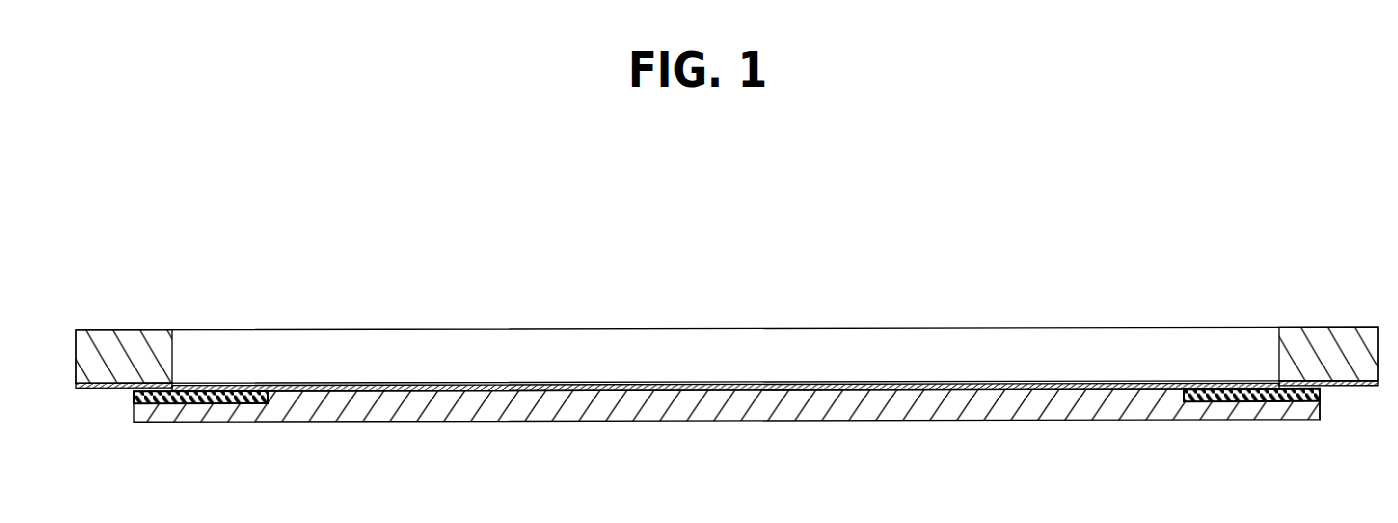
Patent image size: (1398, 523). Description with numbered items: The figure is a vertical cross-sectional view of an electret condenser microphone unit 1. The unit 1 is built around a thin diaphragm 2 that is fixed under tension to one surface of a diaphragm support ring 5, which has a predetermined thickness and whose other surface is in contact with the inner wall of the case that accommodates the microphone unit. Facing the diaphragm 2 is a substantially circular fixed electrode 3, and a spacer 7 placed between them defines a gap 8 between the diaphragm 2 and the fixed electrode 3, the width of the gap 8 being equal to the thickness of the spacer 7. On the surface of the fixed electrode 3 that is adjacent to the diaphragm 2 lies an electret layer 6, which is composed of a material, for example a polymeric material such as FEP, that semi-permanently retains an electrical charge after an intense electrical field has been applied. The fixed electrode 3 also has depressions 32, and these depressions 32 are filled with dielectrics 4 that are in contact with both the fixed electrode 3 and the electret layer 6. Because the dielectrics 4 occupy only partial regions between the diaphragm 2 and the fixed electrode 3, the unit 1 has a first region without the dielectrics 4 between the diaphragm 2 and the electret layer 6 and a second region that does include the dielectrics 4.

The unit 1 is at (732, 338).
The diaphragm 2 is at (528, 383).
The fixed electrode 3 is at (757, 422).
The dielectrics 4 is at (1265, 400).
The diaphragm support ring 5 is at (1335, 330).
The electret layer 6 is at (511, 392).
The spacer 7 is at (100, 388).
The gap 8 is at (373, 386).
The depressions 32 is at (1320, 399).